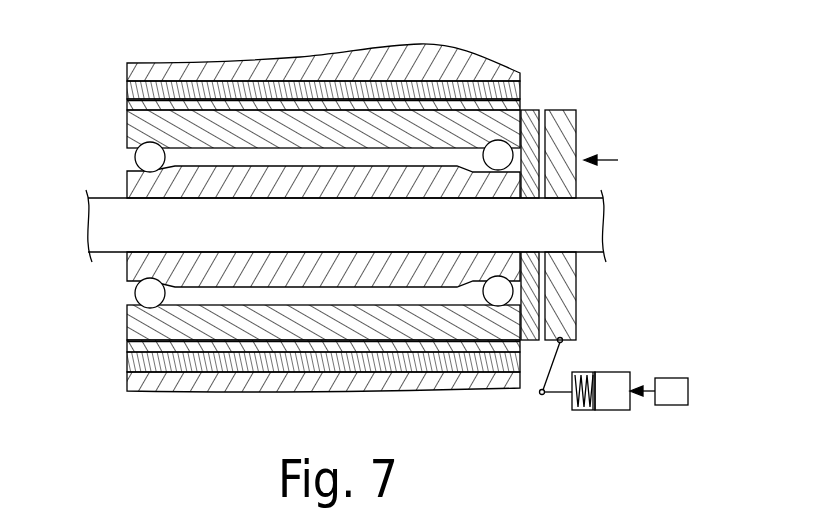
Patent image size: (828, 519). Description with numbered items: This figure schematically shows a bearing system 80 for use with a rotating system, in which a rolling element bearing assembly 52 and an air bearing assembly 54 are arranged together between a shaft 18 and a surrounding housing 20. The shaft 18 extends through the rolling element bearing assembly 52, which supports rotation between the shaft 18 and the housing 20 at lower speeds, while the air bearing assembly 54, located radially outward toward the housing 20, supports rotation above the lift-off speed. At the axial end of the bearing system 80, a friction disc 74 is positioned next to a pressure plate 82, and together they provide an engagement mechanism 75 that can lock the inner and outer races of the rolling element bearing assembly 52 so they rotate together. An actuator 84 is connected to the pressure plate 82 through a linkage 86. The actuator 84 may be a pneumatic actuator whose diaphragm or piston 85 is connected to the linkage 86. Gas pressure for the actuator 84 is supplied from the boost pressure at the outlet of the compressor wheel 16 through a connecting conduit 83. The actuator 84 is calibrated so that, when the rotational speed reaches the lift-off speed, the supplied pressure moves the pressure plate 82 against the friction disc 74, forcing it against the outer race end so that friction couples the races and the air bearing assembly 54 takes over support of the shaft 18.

The housing 20 is at (240, 62).
The air bearing assembly 54 is at (124, 95).
The rolling element bearing assembly 52 is at (124, 171).
The shaft 18 is at (264, 236).
The bearing system 80 is at (105, 335).
The friction disc 74 is at (525, 110).
The pressure plate 82 is at (577, 130).
The engagement mechanism 75 is at (617, 164).
The linkage 86 is at (559, 393).
The diaphragm or piston 85 is at (597, 399).
The actuator 84 is at (604, 372).
The connecting conduit 83 is at (650, 388).
The compressor wheel 16 is at (668, 405).